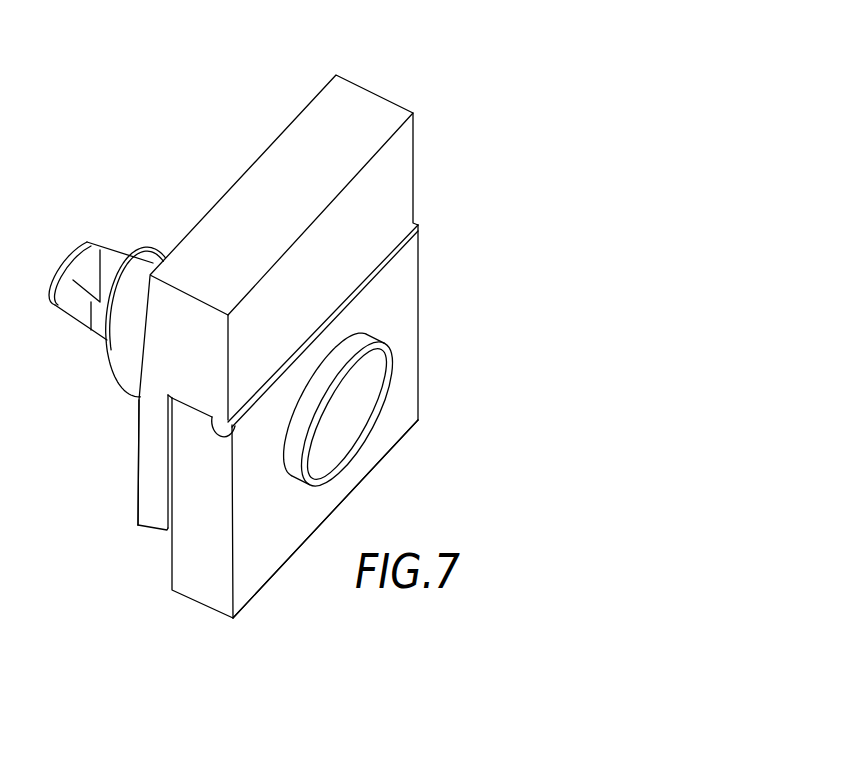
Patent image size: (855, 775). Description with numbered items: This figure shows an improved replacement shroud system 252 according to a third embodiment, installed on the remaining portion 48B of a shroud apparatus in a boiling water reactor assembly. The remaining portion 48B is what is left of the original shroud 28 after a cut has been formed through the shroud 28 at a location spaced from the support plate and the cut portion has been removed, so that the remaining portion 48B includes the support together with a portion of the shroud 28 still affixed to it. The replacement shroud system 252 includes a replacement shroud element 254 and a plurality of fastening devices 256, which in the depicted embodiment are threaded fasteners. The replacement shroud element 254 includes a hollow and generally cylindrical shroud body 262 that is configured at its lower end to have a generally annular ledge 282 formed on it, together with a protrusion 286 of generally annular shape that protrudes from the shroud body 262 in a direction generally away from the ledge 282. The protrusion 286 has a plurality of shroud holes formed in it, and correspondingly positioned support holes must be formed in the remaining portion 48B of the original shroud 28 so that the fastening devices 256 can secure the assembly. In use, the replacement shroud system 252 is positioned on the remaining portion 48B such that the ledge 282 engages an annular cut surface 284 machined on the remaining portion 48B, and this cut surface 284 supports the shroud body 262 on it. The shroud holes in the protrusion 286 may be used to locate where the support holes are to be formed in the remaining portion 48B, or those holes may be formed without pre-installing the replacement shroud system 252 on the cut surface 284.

The replacement shroud system 252 is at (420, 127).
The replacement shroud element 254 is at (423, 182).
The shroud body 262 is at (415, 200).
The fastening devices 256 is at (378, 357).
The remaining portion 48B is at (412, 372).
The shroud 28 is at (388, 433).
The ledge 282 is at (233, 438).
The cut surface 284 is at (168, 395).
The protrusion 286 is at (150, 532).